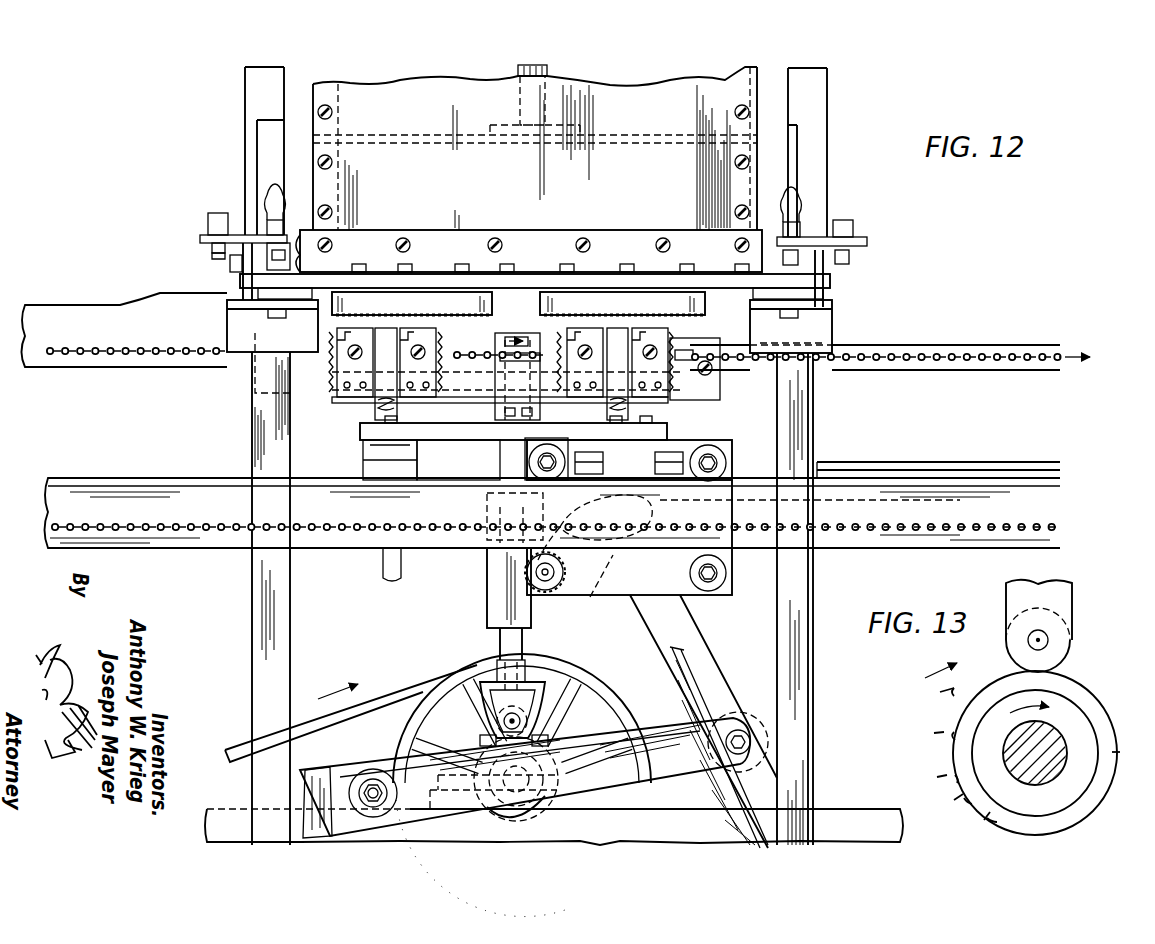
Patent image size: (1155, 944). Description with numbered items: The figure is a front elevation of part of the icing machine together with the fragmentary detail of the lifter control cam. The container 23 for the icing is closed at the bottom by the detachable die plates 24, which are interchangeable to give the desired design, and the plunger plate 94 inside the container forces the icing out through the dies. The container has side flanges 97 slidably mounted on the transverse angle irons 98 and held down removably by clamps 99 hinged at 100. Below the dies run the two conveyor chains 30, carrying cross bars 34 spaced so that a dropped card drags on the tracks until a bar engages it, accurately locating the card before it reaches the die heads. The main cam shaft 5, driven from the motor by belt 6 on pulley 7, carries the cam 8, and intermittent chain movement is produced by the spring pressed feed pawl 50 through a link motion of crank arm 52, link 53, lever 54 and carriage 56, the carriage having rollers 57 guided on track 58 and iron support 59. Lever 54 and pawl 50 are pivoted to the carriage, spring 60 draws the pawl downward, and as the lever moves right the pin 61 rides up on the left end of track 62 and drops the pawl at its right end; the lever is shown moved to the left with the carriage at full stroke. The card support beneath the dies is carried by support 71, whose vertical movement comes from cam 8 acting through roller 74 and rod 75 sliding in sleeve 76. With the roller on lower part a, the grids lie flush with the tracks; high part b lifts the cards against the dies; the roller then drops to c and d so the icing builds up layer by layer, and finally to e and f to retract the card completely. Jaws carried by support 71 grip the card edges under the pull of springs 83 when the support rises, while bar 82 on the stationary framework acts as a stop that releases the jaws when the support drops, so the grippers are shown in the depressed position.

In FIG. 12, the main cam shaft 5 is at (545, 810).
In FIG. 13, the main cam shaft 5 is at (1058, 767).
In FIG. 12, the belt 6 is at (383, 697).
In FIG. 12, the pulley 7 is at (582, 688).
In FIG. 12, the cam 8 is at (463, 752).
In FIG. 13, the cam 8 is at (1093, 698).
In FIG. 12, the container 23 is at (645, 198).
In FIG. 12, the die plates 24 is at (432, 297).
In FIG. 12, the chains 30 is at (190, 362).
In FIG. 12, the cross bars 34 is at (520, 328).
In FIG. 12, the feed pawl 50 is at (613, 550).
In FIG. 12, the crank arm 52 is at (348, 772).
In FIG. 12, the link 53 is at (637, 742).
In FIG. 12, the lever 54 is at (676, 653).
In FIG. 12, the carriage 56 is at (622, 600).
In FIG. 12, the rollers 57 is at (712, 446).
In FIG. 12, the track 58 is at (842, 466).
In FIG. 12, the iron support 59 is at (207, 460).
In FIG. 12, the spring 60 is at (564, 559).
In FIG. 12, the pin 61 is at (602, 515).
In FIG. 12, the track 62 is at (915, 490).
In FIG. 12, the support 71 is at (362, 424).
In FIG. 12, the roller 74 is at (530, 712).
In FIG. 13, the roller 74 is at (1062, 646).
In FIG. 12, the rod 75 is at (500, 639).
In FIG. 13, the rod 75 is at (1060, 594).
In FIG. 12, the sleeve 76 is at (502, 581).
In FIG. 12, the bar 82 is at (640, 340).
In FIG. 12, the springs 83 is at (693, 375).
In FIG. 12, the plunger plate 94 is at (640, 135).
In FIG. 12, the side flanges 97 is at (808, 281).
In FIG. 12, the transverse angle irons 98 is at (830, 297).
In FIG. 12, the clamps 99 is at (241, 224).
In FIG. 12, the hinges 100 is at (212, 236).
In FIG. 13, the lower part of cam a is at (1125, 752).
In FIG. 13, the high part of cam b is at (943, 691).
In FIG. 13, the cam step c is at (943, 733).
In FIG. 13, the cam step d is at (940, 777).
In FIG. 13, the cam part e is at (961, 800).
In FIG. 13, the cam part f is at (988, 821).